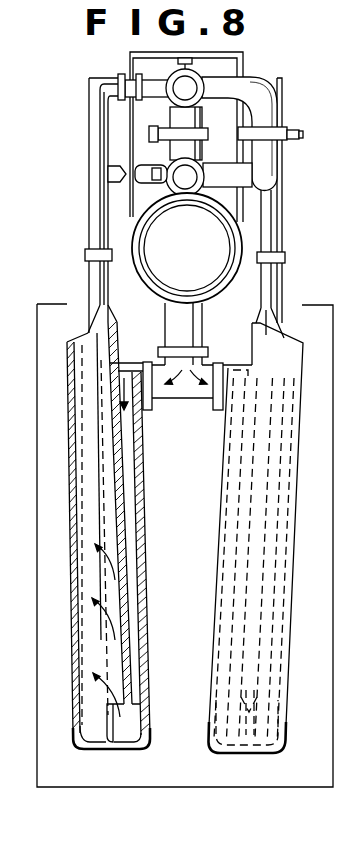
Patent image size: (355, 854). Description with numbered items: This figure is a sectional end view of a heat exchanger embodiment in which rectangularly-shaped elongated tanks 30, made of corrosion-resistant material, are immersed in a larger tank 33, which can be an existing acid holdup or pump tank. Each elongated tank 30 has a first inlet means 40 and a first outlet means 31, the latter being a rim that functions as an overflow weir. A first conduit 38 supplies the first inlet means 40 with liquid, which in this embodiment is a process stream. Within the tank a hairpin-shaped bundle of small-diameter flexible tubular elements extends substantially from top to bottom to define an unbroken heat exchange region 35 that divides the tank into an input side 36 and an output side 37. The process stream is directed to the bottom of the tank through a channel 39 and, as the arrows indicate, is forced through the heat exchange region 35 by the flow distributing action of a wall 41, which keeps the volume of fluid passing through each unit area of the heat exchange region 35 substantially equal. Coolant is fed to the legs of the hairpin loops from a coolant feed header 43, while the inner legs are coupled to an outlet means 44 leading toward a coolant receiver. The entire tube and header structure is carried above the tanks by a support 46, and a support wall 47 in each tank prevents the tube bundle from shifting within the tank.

The elongated tank 30 is at (205, 732).
The first outlet means 31 is at (296, 342).
The larger tank 33 is at (166, 788).
The heat exchange region 35 is at (95, 483).
The input side 36 is at (113, 604).
The output side 37 is at (80, 398).
The first conduit 38 is at (199, 259).
The channel 39 is at (133, 556).
The first inlet means 40 is at (143, 364).
The wall 41 is at (136, 488).
The coolant feed header 43 is at (98, 97).
The outlet means 44 is at (118, 164).
The support 46 is at (245, 68).
The support wall 47 is at (113, 741).